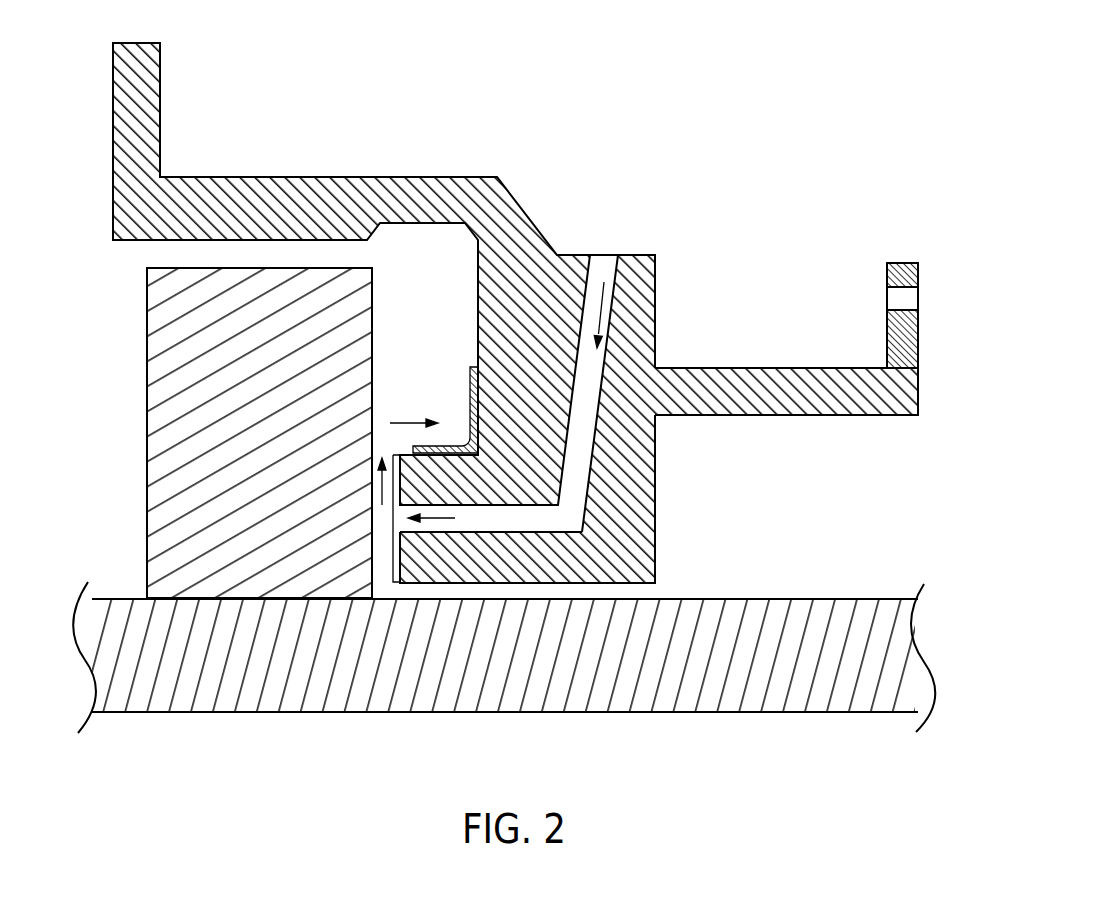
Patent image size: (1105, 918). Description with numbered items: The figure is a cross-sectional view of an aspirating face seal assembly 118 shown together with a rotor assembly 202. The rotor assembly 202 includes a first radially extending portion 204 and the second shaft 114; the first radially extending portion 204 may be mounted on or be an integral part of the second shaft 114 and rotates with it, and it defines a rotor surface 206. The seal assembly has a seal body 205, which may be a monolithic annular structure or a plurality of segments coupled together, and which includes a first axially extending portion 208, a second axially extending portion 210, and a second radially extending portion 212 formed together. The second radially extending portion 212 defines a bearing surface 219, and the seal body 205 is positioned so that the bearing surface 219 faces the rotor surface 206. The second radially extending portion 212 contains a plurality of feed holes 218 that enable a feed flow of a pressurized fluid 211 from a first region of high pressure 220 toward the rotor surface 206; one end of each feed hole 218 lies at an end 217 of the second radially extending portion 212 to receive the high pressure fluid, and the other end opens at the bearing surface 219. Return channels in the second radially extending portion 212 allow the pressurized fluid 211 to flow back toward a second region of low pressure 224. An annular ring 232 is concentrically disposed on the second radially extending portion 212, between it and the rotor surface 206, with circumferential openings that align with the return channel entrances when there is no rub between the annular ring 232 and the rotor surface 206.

The second shaft 114 is at (160, 708).
The aspirating face seal assembly 118 is at (982, 56).
The rotor assembly 202 is at (784, 726).
The first radially extending portion 204 is at (152, 322).
The seal body 205 is at (532, 224).
The rotor surface 206 is at (374, 293).
The first axially extending portion 208 is at (848, 416).
The second axially extending portion 210 is at (208, 177).
The pressurized fluid 211 is at (605, 309).
The second radially extending portion 212 is at (655, 532).
The end 217 is at (655, 255).
The feed holes 218 is at (568, 523).
The bearing surface 219 is at (388, 518).
The first region of high pressure 220 is at (693, 165).
The second region of low pressure 224 is at (452, 308).
The annular ring 232 is at (470, 378).